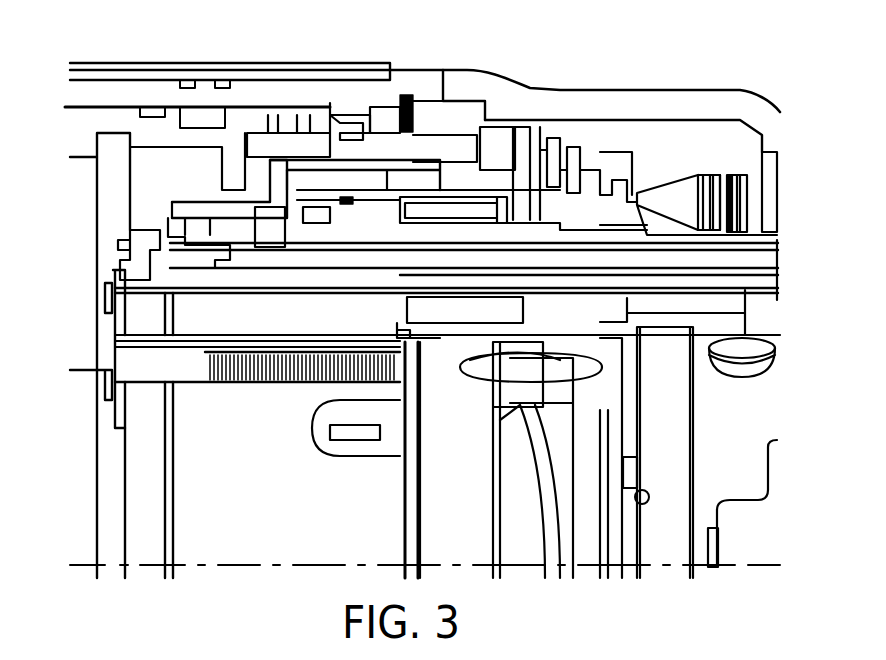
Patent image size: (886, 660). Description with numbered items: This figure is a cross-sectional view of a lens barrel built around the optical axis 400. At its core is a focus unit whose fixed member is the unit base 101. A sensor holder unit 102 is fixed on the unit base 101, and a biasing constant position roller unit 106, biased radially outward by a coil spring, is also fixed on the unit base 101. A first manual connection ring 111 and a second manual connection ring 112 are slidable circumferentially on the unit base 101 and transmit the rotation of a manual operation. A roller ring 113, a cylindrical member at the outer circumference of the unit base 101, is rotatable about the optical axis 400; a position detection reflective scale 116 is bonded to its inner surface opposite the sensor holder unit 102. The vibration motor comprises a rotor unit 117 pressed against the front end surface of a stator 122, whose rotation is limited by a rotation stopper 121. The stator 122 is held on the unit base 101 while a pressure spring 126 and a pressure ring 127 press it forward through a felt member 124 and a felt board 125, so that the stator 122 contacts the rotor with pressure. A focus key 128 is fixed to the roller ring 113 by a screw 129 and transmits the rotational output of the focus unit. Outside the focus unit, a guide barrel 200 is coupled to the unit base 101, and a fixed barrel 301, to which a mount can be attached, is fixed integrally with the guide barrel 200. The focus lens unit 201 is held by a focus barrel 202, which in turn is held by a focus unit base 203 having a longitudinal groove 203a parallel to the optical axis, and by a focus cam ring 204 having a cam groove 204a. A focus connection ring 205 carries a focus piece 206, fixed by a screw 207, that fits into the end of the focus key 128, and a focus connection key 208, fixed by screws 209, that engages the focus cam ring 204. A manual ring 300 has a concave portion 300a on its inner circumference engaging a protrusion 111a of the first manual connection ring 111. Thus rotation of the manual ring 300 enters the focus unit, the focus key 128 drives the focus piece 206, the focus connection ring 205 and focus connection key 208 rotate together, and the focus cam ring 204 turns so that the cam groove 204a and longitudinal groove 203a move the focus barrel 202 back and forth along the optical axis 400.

The unit base 101 is at (558, 150).
The sensor holder unit 102 is at (487, 117).
The biasing constant position roller unit 106 is at (320, 180).
The first manual connection ring 111 is at (335, 140).
The protrusion 111a is at (355, 140).
The second manual connection ring 112 is at (397, 147).
The roller ring 113 is at (520, 195).
The position detection reflective scale 116 is at (443, 207).
The rotor unit 117 is at (580, 157).
The rotation stopper 121 is at (647, 200).
The stator 122 is at (682, 193).
The felt member 124 is at (712, 193).
The felt board 125 is at (732, 187).
The pressure spring 126 is at (743, 180).
The pressure ring 127 is at (747, 173).
The focus key 128 is at (163, 220).
The screw 129 is at (178, 200).
The guide barrel 200 is at (250, 125).
The focus lens unit 201 is at (560, 490).
The focus barrel 202 is at (637, 383).
The focus unit base 203 is at (715, 352).
The longitudinal groove 203a is at (657, 367).
The focus cam ring 204 is at (700, 262).
The cam groove 204a is at (700, 318).
The focus connection ring 205 is at (118, 248).
The focus piece 206 is at (100, 147).
The screw 207 is at (165, 220).
The focus connection key 208 is at (180, 363).
The screws 209 is at (97, 372).
The manual ring 300 is at (198, 140).
The concave portion 300a is at (280, 107).
The fixed barrel 301 is at (640, 103).
The optical axis 400 is at (240, 563).